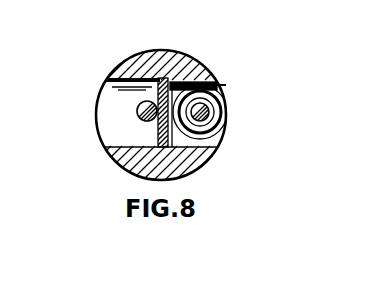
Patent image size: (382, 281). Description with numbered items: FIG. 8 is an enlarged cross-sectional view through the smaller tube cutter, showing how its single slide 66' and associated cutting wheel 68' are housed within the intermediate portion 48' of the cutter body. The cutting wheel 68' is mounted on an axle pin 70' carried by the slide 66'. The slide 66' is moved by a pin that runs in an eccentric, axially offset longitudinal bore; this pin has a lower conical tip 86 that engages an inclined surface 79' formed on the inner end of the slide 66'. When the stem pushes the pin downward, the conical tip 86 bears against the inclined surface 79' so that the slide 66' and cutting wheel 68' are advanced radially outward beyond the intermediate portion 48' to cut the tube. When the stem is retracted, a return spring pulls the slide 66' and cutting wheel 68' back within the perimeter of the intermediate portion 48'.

The lower conical tip 86 is at (139, 105).
The inclined surface 79' is at (116, 112).
The slide 66' is at (222, 108).
The cutting wheel 68' is at (232, 112).
The axle pin 70' is at (236, 120).
The intermediate portion 48' is at (152, 115).